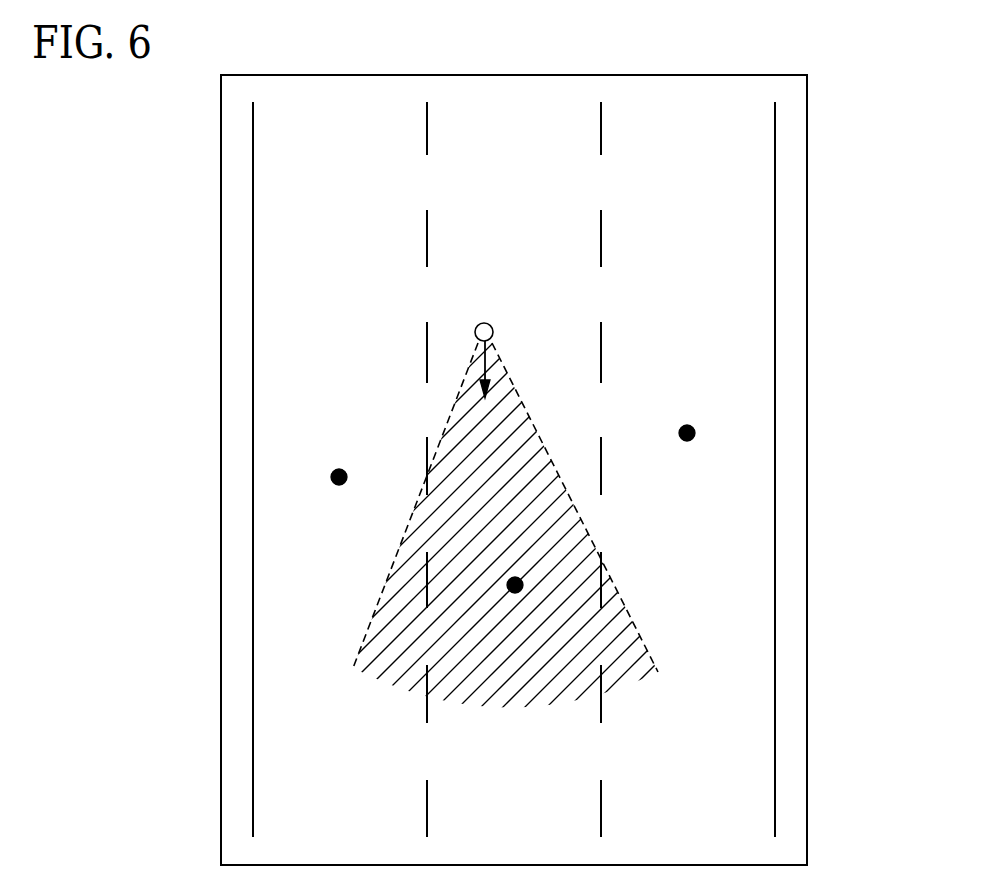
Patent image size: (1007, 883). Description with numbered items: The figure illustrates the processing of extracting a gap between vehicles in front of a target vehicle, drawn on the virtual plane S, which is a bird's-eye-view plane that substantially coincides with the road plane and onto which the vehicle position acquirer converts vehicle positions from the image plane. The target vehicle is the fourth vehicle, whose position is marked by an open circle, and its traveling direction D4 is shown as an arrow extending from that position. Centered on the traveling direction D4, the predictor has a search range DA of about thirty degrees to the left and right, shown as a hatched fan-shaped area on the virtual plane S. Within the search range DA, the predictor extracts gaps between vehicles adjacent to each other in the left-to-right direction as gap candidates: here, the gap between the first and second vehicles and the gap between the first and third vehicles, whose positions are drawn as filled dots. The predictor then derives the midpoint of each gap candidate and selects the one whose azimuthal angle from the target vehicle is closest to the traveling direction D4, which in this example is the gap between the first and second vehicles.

The virtual plane S is at (808, 100).
The traveling direction D4 is at (503, 369).
The search range DA is at (521, 673).